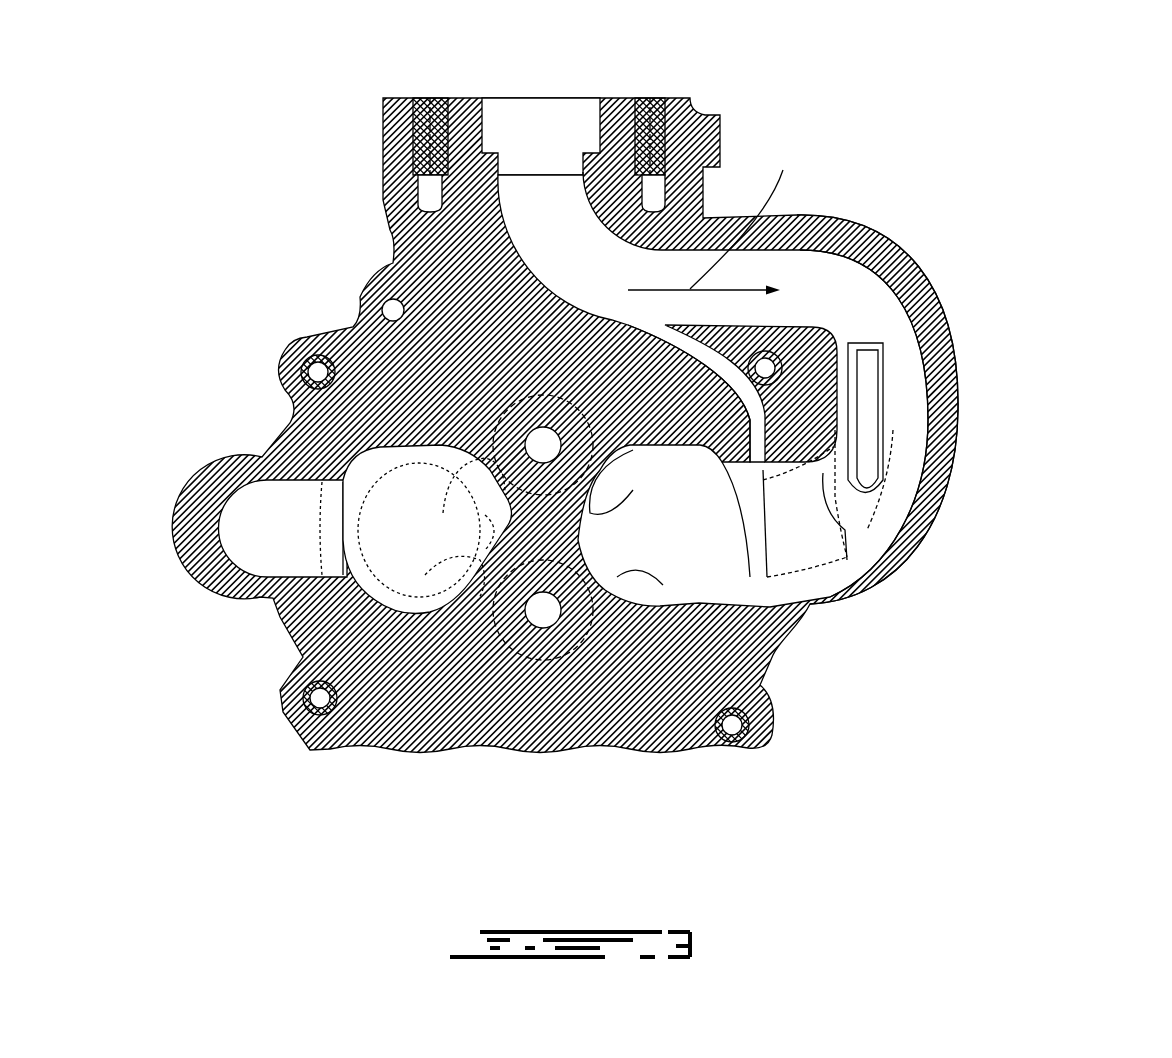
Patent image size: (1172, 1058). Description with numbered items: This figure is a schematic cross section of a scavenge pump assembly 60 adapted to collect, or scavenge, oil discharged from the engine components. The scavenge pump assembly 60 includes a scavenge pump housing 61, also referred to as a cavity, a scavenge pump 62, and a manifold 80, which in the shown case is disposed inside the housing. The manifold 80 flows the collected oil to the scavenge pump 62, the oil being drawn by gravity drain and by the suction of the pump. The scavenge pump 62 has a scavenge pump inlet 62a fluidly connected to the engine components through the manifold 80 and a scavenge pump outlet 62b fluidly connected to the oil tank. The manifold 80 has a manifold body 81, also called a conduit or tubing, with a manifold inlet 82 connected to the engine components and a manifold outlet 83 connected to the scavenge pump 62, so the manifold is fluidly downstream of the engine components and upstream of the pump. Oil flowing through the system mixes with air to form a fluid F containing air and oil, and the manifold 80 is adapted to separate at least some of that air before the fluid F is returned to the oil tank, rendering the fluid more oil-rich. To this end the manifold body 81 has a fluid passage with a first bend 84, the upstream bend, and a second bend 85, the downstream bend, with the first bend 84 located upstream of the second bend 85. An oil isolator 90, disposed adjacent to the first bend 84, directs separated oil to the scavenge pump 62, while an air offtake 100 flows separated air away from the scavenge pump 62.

The scavenge pump assembly 60 is at (586, 443).
The scavenge pump housing 61 is at (490, 732).
The scavenge pump 62 is at (652, 579).
The scavenge pump inlet 62a is at (732, 560).
The scavenge pump outlet 62b is at (568, 548).
The manifold 80 is at (930, 343).
The manifold body 81 is at (918, 418).
The manifold inlet 82 is at (540, 122).
The manifold outlet 83 is at (750, 560).
The first bend 84 is at (607, 247).
The second bend 85 is at (930, 397).
The oil isolator 90 is at (778, 333).
The air offtake 100 is at (879, 462).
The fluid F is at (713, 216).